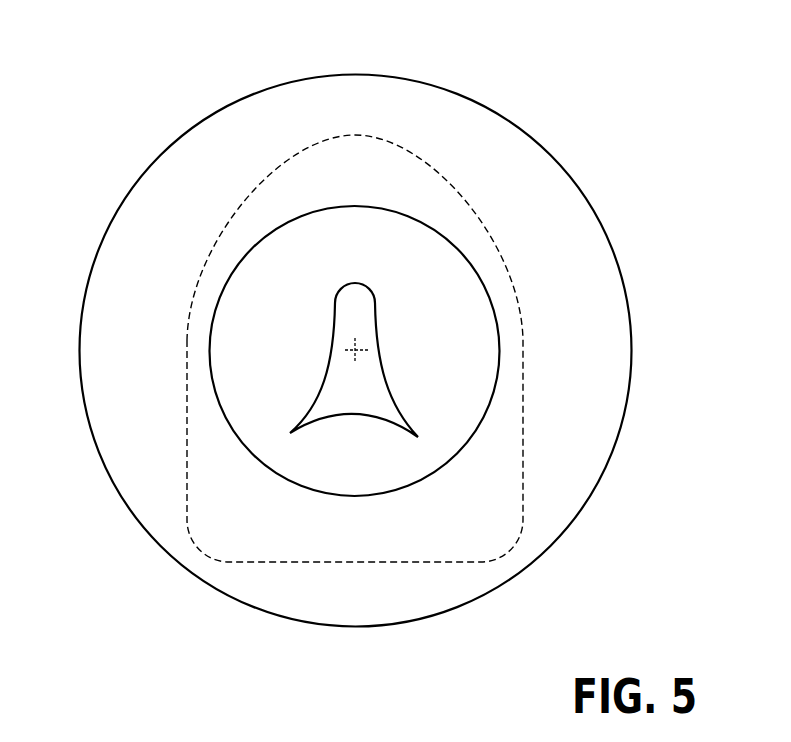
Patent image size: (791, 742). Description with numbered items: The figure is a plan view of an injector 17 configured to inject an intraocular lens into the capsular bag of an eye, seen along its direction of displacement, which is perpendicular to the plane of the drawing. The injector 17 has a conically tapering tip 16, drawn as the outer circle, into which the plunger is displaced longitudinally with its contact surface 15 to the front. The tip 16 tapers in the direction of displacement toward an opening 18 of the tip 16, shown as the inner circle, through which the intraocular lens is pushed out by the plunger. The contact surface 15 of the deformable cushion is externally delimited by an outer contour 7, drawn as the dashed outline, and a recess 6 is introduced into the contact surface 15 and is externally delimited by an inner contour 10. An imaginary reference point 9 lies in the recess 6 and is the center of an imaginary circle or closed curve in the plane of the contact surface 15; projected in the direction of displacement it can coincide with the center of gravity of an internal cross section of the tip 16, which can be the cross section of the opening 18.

The recess 6 is at (380, 395).
The outer contour 7 is at (518, 300).
The reference point 9 is at (356, 351).
The inner contour 10 is at (334, 330).
The contact surface 15 is at (492, 348).
The tip 16 is at (98, 323).
The injector 17 is at (122, 82).
The opening 18 is at (437, 472).